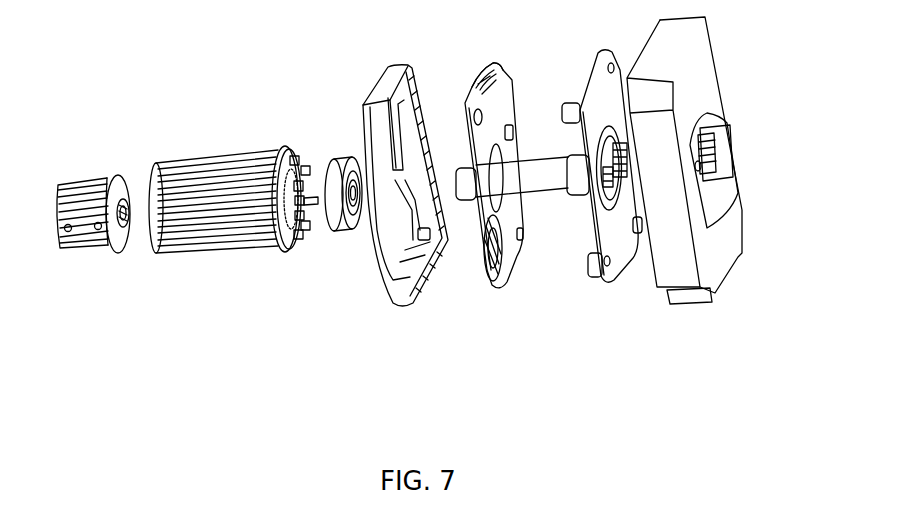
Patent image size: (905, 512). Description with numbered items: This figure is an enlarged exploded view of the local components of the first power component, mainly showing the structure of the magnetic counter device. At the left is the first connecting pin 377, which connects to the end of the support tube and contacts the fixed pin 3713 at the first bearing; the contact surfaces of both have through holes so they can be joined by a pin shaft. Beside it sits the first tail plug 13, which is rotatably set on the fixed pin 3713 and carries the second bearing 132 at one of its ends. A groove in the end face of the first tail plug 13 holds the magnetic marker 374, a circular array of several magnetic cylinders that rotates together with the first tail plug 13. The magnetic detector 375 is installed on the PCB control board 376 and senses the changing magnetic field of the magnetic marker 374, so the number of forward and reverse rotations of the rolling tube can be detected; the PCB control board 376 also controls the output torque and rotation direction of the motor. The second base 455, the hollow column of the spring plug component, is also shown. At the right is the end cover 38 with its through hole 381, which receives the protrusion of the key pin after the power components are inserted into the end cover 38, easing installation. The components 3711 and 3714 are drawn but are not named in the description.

The first tail plug 13 is at (263, 250).
The second bearing 132 is at (346, 232).
The magnetic marker 374 is at (300, 158).
The magnetic detector 375 is at (513, 282).
The PCB control board 376 is at (478, 82).
The first connecting pin 377 is at (97, 243).
The end cover 38 is at (692, 300).
The through hole 381 is at (712, 148).
The end plate 3711 is at (603, 283).
The fixed pin 3713 is at (550, 166).
The shaft end 3714 is at (578, 190).
The second base 455 is at (405, 300).